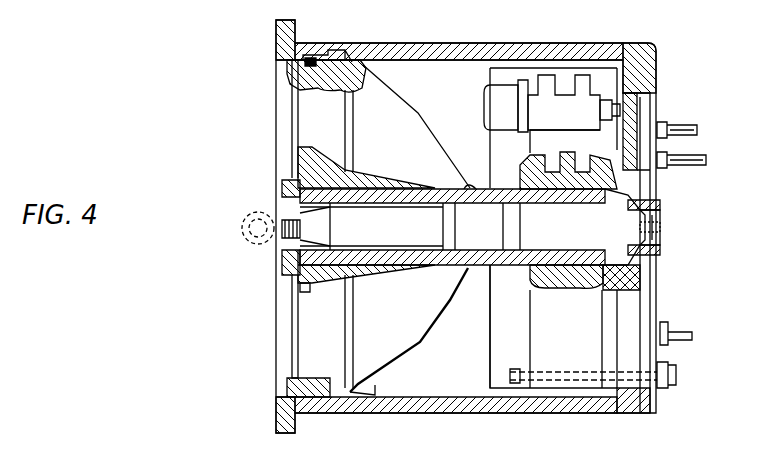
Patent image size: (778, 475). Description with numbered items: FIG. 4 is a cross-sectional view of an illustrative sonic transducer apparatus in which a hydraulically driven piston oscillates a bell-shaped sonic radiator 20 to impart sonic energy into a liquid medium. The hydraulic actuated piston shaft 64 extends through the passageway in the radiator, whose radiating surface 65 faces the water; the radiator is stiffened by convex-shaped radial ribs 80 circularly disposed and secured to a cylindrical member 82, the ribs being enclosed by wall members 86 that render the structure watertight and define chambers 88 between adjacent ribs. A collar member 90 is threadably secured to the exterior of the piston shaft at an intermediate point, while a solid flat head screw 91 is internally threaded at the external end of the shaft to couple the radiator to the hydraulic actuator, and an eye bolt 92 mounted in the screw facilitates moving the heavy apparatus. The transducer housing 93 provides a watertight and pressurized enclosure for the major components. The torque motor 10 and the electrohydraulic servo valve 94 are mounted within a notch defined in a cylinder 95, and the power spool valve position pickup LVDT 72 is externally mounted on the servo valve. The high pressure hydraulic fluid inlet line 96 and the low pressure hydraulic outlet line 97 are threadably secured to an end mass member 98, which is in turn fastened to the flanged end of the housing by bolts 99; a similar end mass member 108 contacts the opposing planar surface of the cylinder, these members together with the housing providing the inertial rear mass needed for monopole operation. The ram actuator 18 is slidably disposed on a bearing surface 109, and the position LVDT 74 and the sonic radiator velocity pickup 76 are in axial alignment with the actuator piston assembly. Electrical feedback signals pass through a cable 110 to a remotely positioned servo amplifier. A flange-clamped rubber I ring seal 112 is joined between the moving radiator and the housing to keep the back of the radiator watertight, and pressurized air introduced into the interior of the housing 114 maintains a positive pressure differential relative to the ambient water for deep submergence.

The torque motor 10 is at (498, 112).
The ram actuator 18 is at (555, 272).
The sonic radiator 20 is at (292, 323).
The piston shaft 64 is at (481, 267).
The radiating surface 65 is at (292, 133).
The power spool valve position pickup LVDT 72 is at (608, 107).
The position LVDT 74 is at (652, 240).
The sonic radiator velocity pickup 76 is at (627, 224).
The radial ribs 80 is at (348, 72).
The cylindrical member 82 is at (340, 58).
The wall members 86 is at (407, 98).
The chambers 88 is at (302, 283).
The collar member 90 is at (472, 186).
The solid flat head screw 91 is at (282, 205).
The eye bolt 92 is at (245, 238).
The transducer housing 93 is at (475, 52).
The electrohydraulic servo valve 94 is at (567, 100).
The cylinder 95 is at (566, 339).
The high pressure hydraulic fluid inlet line 96 is at (683, 133).
The low pressure hydraulic outlet line 97 is at (697, 162).
The end mass member 98 is at (622, 357).
The bolts 99 is at (672, 375).
The end mass member 108 is at (502, 340).
The bearing surface 109 is at (600, 278).
The cable 110 is at (678, 327).
The rubber I ring seal 112 is at (310, 58).
The interior of the housing 114 is at (418, 368).